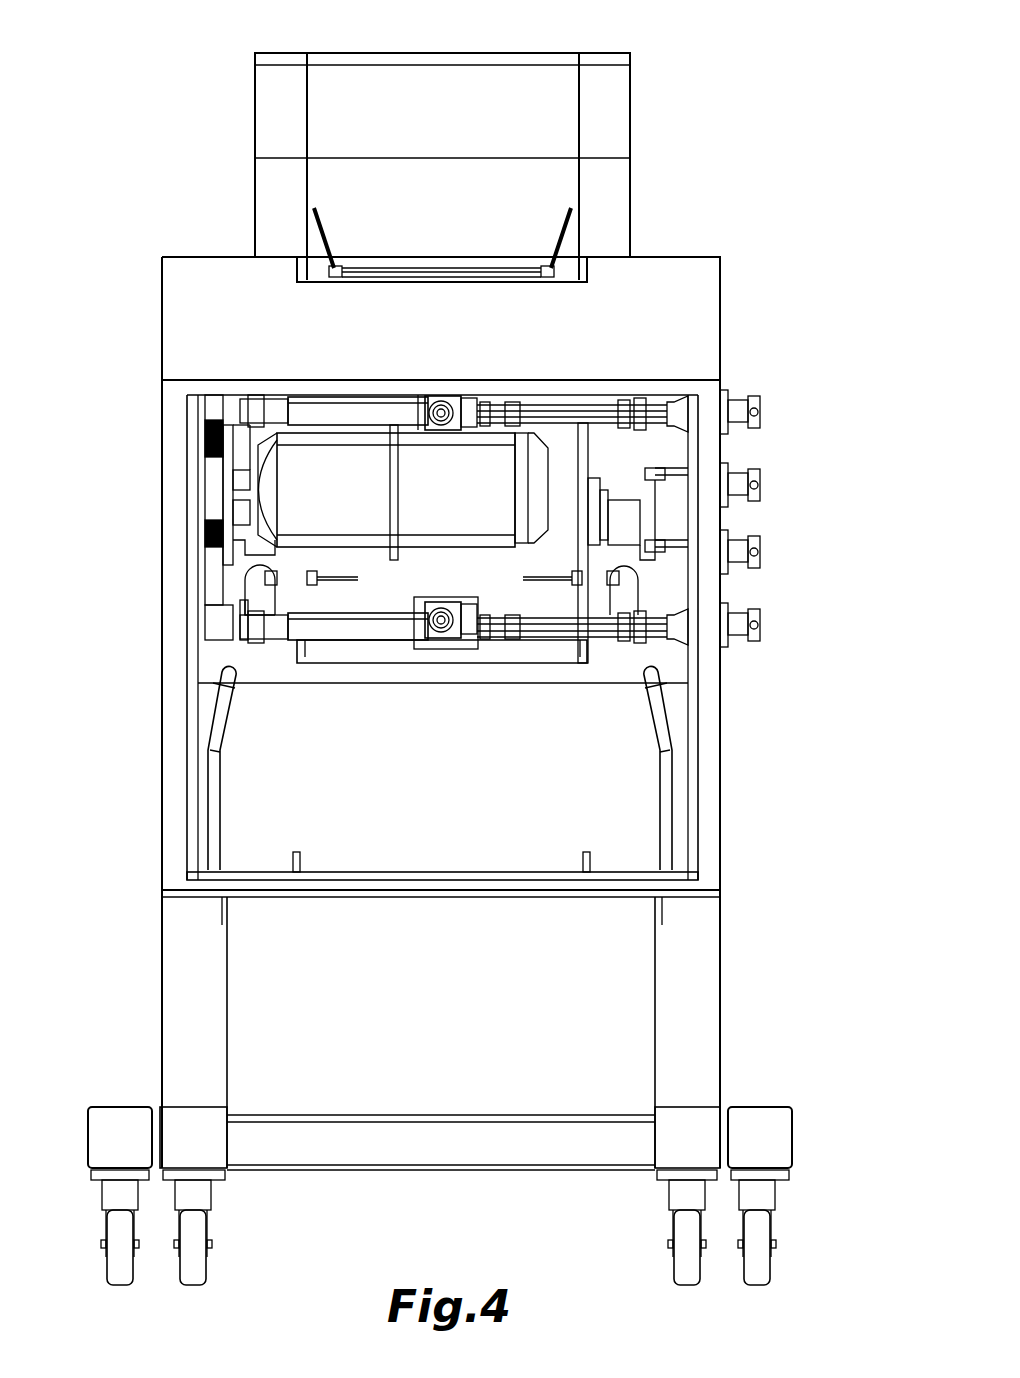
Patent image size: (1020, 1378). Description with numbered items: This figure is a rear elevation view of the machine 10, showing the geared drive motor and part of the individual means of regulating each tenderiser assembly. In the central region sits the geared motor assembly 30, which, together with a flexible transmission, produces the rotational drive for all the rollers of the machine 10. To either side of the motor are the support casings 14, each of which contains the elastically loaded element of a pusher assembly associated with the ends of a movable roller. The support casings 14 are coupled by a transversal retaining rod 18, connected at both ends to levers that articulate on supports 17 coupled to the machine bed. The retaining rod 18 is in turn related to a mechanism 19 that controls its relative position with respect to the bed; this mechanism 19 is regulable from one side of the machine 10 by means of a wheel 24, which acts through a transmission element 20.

The machine 10 is at (712, 145).
The support casing 14 is at (255, 597).
The support 17 is at (303, 558).
The retaining rod 18 is at (345, 410).
The mechanism 19 is at (443, 395).
The transmission element 20 is at (563, 410).
The wheel 24 is at (760, 408).
The geared motor assembly 30 is at (495, 468).